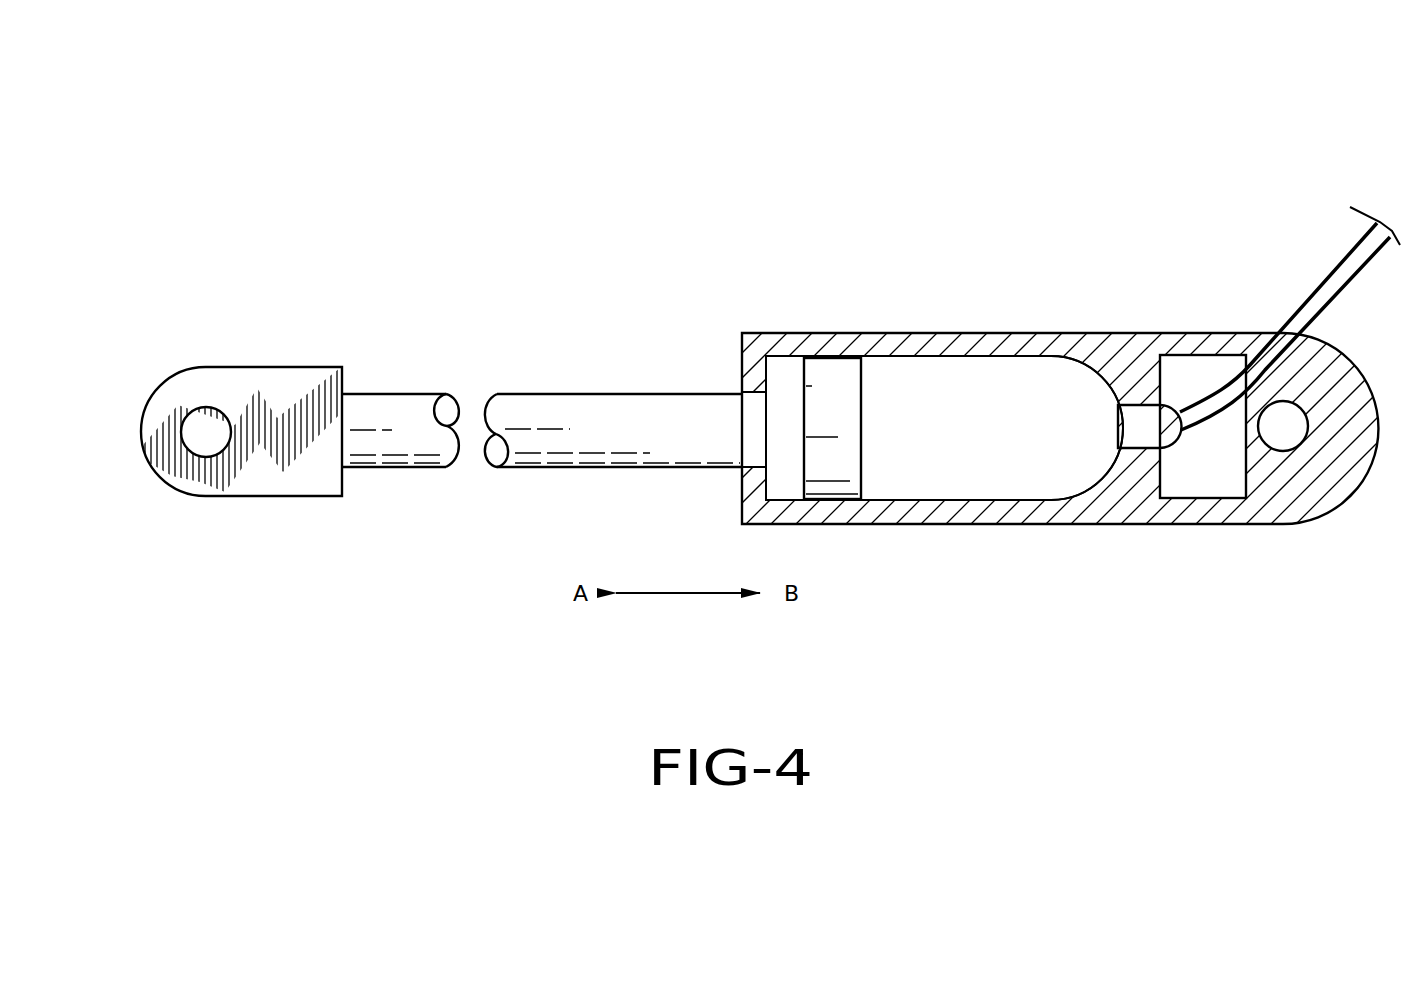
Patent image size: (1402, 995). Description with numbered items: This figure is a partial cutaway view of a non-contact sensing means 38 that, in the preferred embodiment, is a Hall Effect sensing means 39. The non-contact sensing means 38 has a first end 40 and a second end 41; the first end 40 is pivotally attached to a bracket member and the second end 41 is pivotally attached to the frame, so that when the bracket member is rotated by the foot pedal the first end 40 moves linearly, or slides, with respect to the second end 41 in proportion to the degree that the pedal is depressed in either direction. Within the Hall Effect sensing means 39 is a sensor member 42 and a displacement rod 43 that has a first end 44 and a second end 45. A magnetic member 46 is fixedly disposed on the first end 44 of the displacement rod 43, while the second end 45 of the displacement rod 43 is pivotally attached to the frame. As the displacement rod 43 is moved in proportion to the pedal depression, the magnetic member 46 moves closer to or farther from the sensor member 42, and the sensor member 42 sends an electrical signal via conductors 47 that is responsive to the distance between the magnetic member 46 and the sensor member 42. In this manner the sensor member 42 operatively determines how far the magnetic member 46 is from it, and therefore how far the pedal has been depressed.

The non-contact sensing means 38 is at (817, 262).
The Hall Effect sensing means 39 is at (894, 270).
The first end 40 is at (1167, 225).
The second end 41 is at (287, 323).
The sensor member 42 is at (1150, 430).
The displacement rod 43 is at (530, 441).
The first end 44 is at (913, 545).
The second end 45 is at (202, 540).
The magnetic member 46 is at (842, 460).
The conductors 47 is at (1285, 232).